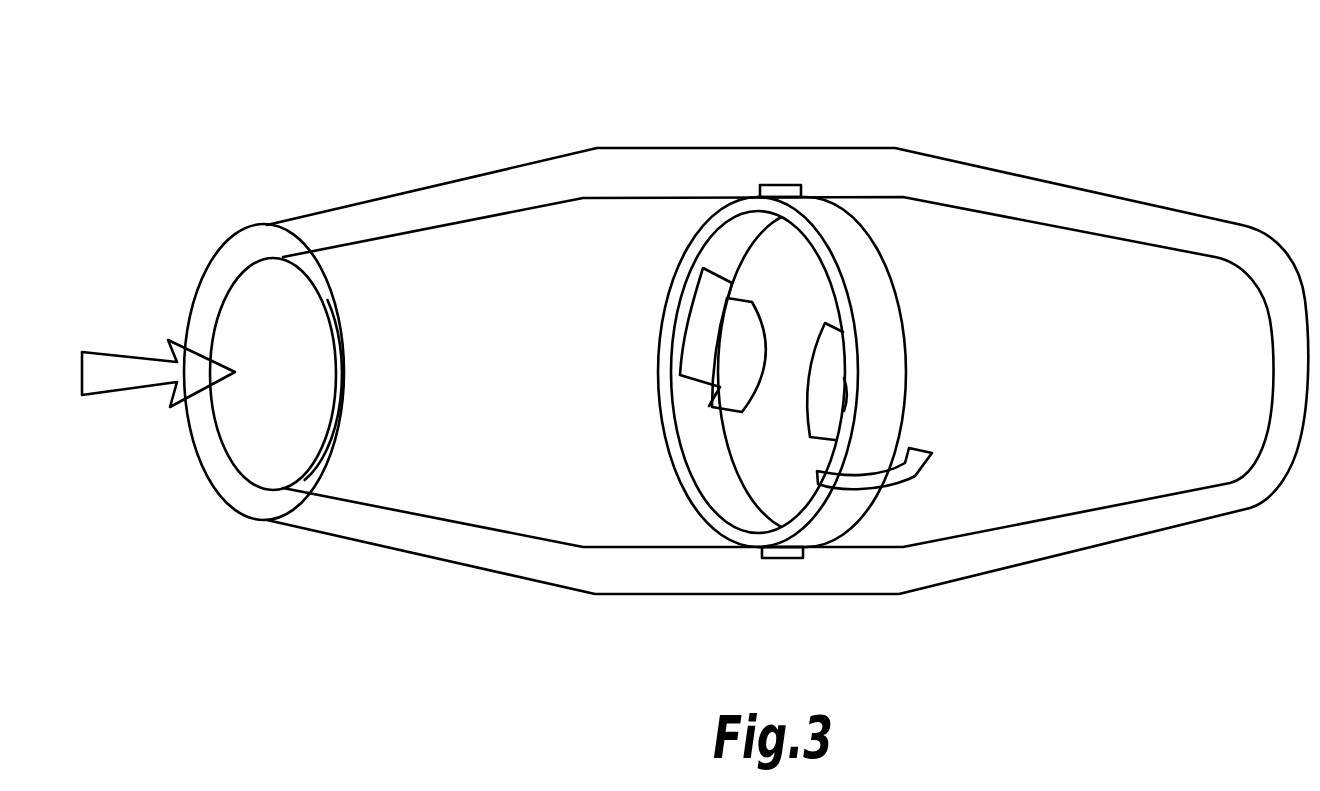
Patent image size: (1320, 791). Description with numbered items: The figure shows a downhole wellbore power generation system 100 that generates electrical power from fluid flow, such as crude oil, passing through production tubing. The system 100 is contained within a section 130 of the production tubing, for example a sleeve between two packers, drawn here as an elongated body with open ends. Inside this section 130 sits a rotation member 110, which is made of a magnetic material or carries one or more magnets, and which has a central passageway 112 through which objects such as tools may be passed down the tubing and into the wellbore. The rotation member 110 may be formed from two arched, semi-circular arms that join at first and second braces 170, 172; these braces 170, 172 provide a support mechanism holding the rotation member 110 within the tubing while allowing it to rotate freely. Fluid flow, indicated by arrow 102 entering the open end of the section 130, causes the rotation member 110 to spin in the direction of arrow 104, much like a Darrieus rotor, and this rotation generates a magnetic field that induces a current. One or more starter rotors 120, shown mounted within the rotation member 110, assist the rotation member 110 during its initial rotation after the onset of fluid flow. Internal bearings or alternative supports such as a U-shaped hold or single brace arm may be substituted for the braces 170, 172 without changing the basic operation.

The downhole wellbore power generation system 100 is at (1052, 122).
The arrow indicating fluid flow 102 is at (108, 367).
The arrow indicating direction of rotation 104 is at (898, 482).
The rotation member 110 is at (822, 212).
The passageway 112 is at (747, 437).
The starter rotor 120 is at (699, 298).
The section of production tubing 130 is at (1140, 556).
The first brace 170 is at (778, 185).
The second brace 172 is at (781, 559).